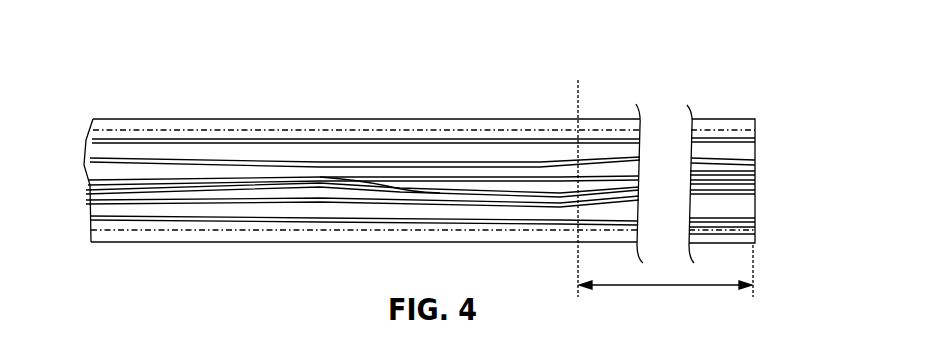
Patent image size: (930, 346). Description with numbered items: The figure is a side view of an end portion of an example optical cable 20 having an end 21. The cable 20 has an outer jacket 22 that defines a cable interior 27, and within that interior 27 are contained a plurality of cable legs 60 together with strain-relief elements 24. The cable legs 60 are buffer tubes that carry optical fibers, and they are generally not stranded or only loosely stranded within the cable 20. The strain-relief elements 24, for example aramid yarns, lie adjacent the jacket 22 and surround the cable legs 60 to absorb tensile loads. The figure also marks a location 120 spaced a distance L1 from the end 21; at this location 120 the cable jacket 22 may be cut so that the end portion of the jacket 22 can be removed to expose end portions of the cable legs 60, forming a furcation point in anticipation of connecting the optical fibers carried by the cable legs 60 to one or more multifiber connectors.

The cable 20 is at (170, 80).
The outer jacket 22 is at (222, 119).
The strain-relief element 24 is at (605, 135).
The cable interior 27 is at (438, 152).
The cable legs 60 is at (388, 156).
The location 120 is at (577, 97).
The end 21 is at (755, 152).
The distance L1 is at (665, 298).